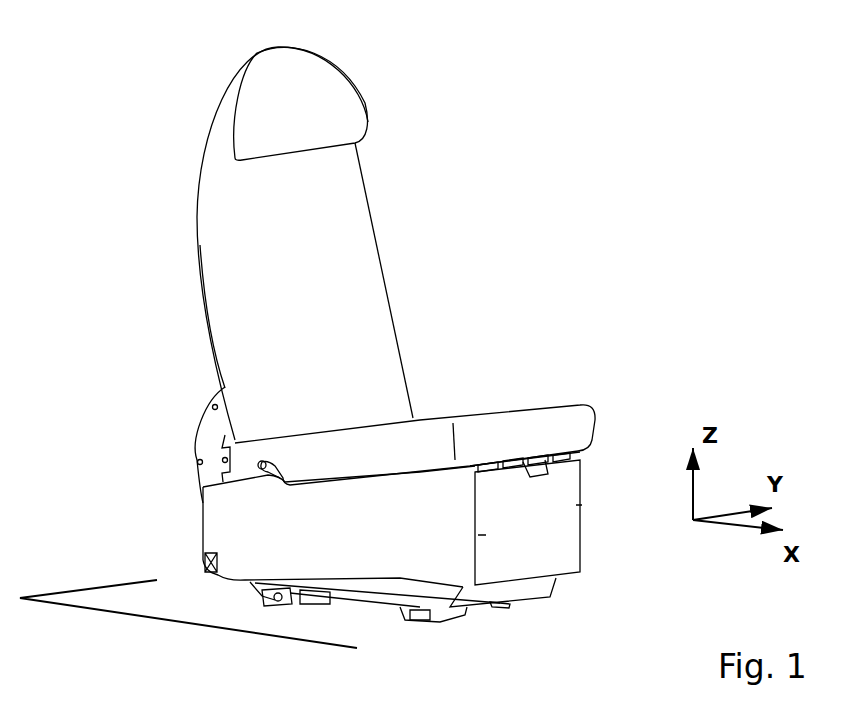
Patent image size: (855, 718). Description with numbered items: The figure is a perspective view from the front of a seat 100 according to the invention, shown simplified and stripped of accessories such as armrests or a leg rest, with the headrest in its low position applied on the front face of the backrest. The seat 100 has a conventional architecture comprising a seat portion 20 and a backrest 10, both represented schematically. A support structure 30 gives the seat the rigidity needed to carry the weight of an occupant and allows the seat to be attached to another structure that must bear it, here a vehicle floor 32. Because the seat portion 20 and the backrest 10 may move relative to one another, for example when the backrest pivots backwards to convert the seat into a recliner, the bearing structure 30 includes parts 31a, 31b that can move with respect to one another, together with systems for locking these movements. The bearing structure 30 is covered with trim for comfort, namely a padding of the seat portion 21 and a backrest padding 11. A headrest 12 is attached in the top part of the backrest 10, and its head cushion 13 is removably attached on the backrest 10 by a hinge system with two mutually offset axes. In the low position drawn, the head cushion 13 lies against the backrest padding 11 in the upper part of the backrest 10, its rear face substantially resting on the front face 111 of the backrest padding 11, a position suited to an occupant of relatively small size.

The seat 100 is at (530, 148).
The backrest 10 is at (415, 340).
The backrest padding 11 is at (352, 222).
The front face of the backrest padding 111 is at (322, 300).
The headrest 12 is at (338, 75).
The head cushion 13 is at (247, 88).
The seat portion 20 is at (510, 410).
The padding of the seat portion 21 is at (572, 420).
The support structure 30 is at (290, 603).
The movable part of the bearing structure 31a is at (208, 440).
The movable part of the bearing structure 31b is at (255, 585).
The vehicle floor 32 is at (140, 592).